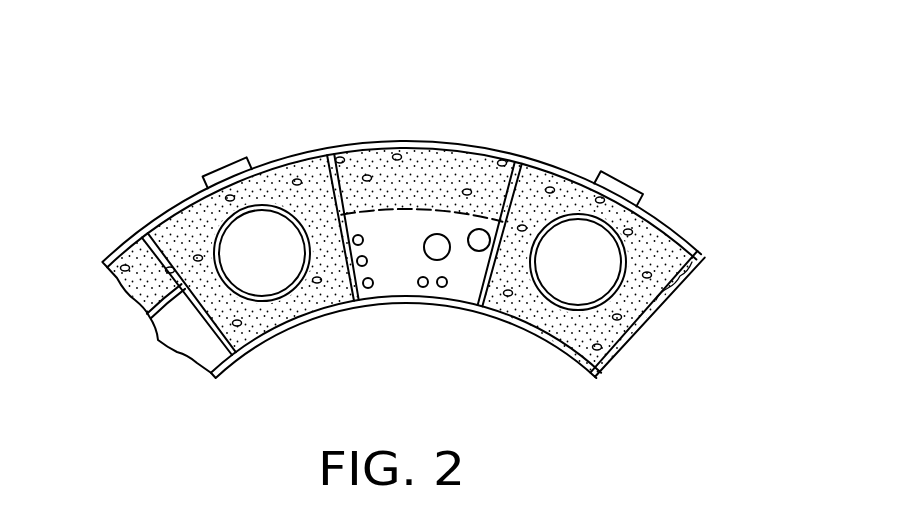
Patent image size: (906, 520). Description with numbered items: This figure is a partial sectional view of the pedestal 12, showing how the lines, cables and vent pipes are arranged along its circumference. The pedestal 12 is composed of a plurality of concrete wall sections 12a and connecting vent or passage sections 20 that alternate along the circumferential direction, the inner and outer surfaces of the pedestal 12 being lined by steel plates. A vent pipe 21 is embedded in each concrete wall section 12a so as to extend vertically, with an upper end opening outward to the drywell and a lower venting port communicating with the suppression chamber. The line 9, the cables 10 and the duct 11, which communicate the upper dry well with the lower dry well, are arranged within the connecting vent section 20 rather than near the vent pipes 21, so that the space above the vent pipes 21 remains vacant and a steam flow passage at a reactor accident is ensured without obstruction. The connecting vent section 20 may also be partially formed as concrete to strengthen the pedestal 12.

The line 9 is at (471, 232).
The cables 10 is at (362, 244).
The duct 11 is at (446, 256).
The pedestal 12 is at (493, 150).
The concrete wall section 12a is at (287, 178).
The connecting vent section 20 is at (388, 232).
The vent pipe 21 is at (226, 238).